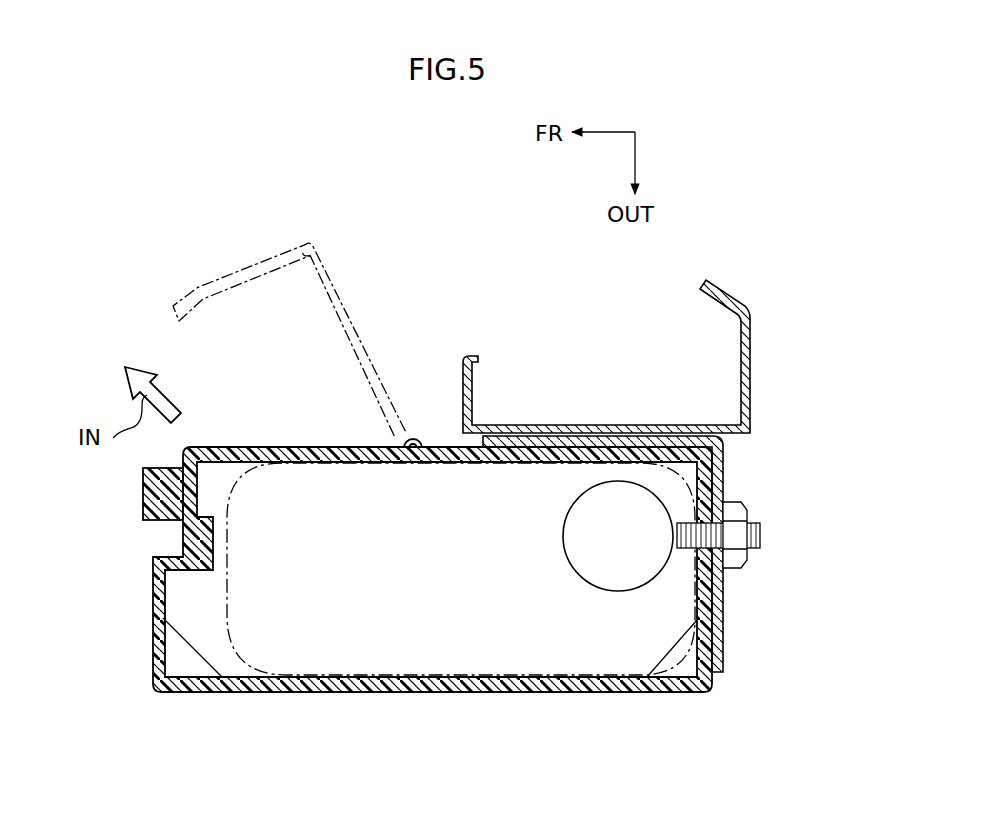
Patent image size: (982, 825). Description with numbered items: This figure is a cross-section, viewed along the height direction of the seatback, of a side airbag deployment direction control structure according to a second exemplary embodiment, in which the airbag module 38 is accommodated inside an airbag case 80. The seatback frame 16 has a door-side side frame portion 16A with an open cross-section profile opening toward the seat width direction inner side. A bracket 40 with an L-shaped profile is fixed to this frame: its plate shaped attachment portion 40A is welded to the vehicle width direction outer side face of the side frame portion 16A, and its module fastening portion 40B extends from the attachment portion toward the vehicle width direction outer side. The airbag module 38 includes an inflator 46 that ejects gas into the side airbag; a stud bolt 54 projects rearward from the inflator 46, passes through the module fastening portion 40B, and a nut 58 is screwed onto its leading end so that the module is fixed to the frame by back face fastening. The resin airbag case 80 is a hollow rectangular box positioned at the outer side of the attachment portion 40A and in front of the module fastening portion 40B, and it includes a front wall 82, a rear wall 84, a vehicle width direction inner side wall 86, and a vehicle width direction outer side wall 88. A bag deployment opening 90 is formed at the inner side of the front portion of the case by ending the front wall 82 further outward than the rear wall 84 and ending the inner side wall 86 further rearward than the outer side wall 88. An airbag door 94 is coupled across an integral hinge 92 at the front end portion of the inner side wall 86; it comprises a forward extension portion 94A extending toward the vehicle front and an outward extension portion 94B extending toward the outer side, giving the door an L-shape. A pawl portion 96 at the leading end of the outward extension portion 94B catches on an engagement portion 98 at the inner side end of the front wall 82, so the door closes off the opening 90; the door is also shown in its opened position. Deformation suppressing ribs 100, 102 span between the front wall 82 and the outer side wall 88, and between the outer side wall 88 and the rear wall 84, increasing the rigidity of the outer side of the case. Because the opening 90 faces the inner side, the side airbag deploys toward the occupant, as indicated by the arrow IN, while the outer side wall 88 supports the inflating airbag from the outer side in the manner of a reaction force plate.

The seatback frame 16 is at (657, 330).
The side frame portion 16A is at (727, 292).
The airbag module 38 is at (222, 621).
The bracket 40 is at (733, 472).
The attachment portion 40A is at (568, 440).
The module fastening portion 40B is at (723, 643).
The inflator 46 is at (564, 545).
The stud bolt 54 is at (760, 537).
The nut 58 is at (748, 515).
The airbag case 80 is at (476, 696).
The front wall 82 is at (153, 623).
The rear wall 84 is at (703, 602).
The vehicle width direction inner side wall 86 is at (647, 450).
The vehicle width direction outer side wall 88 is at (365, 693).
The bag deployment opening 90 is at (215, 518).
The integral hinge 92 is at (415, 438).
The airbag door 94 is at (342, 285).
The forward extension portion 94A is at (377, 343).
The outward extension portion 94B is at (240, 270).
The pawl portion 96 is at (177, 297).
The engagement portion 98 is at (143, 480).
The deformation suppressing rib 100 is at (208, 643).
The deformation suppressing rib 102 is at (668, 636).